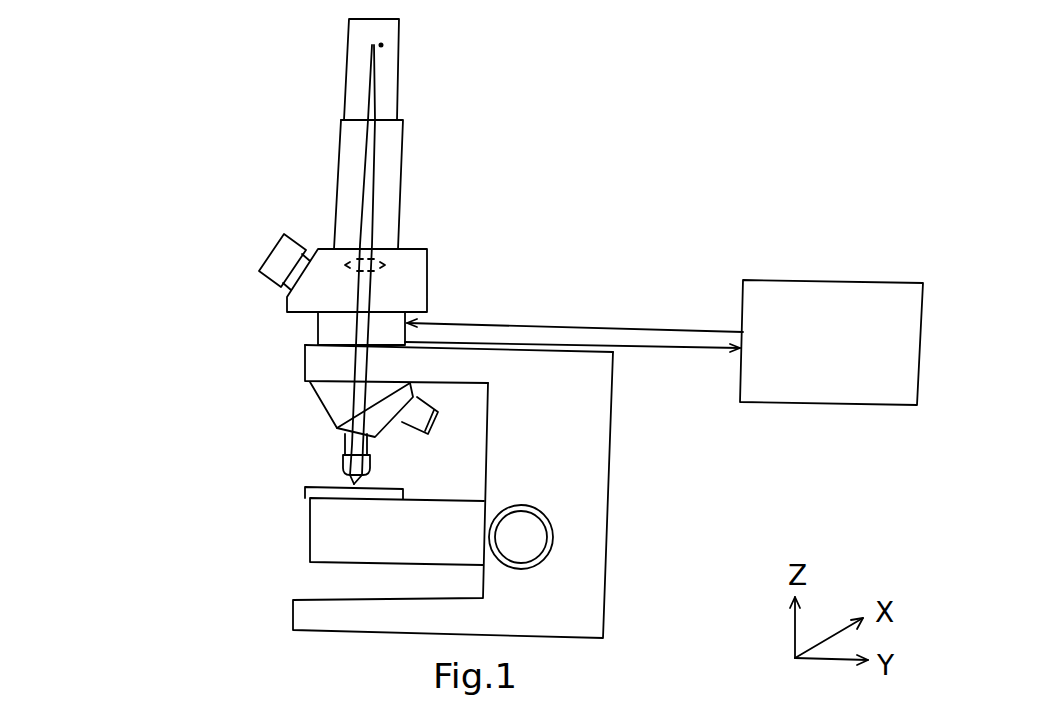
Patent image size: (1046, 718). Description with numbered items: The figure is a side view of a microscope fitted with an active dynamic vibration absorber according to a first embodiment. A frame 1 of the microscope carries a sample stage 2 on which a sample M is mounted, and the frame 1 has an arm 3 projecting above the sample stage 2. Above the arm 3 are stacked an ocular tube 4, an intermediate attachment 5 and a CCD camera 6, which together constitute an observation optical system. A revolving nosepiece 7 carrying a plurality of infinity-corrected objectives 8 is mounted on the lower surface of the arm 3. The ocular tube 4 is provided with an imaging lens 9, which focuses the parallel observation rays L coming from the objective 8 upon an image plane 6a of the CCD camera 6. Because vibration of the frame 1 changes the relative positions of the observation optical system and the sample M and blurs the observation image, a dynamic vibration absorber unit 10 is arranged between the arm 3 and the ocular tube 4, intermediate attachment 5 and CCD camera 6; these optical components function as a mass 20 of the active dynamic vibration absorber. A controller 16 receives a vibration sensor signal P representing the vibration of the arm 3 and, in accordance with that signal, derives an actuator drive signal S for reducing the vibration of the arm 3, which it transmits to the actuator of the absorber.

The frame 1 is at (603, 512).
The sample stage 2 is at (310, 531).
The arm 3 is at (305, 371).
The ocular tube 4 is at (407, 258).
The intermediate attachment 5 is at (400, 152).
The CCD camera 6 is at (397, 68).
The image plane 6a is at (370, 47).
The revolving nosepiece 7 is at (322, 404).
The infinity-corrected objective 8 is at (343, 456).
The imaging lens 9 is at (343, 247).
The dynamic vibration absorber unit 10 is at (318, 328).
The controller 16 is at (858, 282).
The mass 20 is at (602, 3).
The parallel observation rays L is at (380, 288).
The actuator drive signal S is at (650, 328).
The vibration sensor signal P is at (667, 348).
The sample M is at (305, 493).